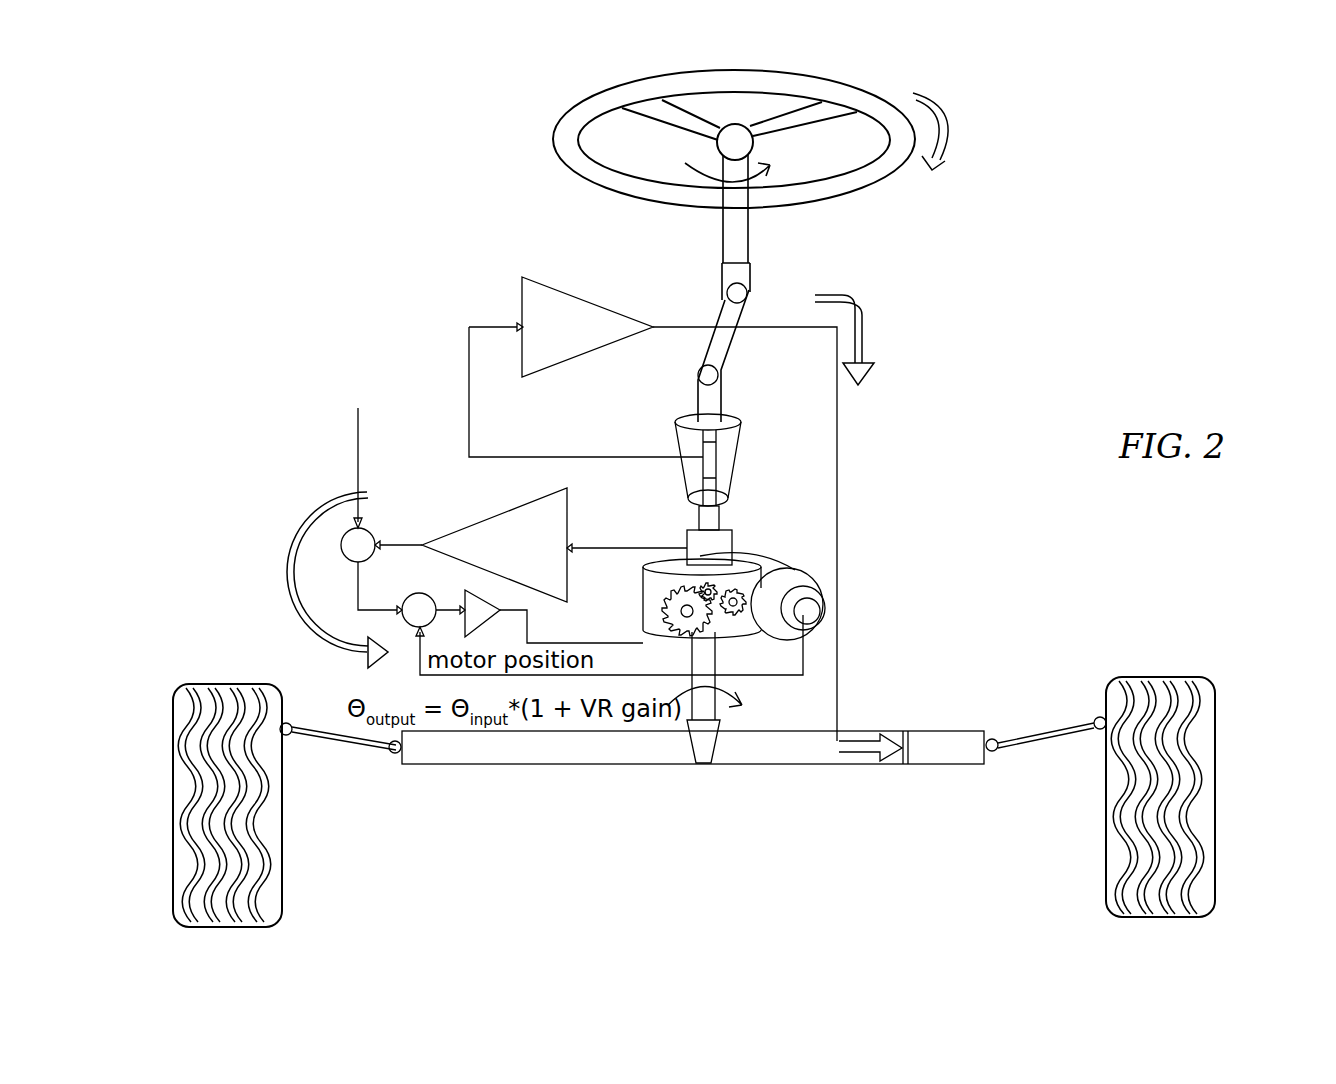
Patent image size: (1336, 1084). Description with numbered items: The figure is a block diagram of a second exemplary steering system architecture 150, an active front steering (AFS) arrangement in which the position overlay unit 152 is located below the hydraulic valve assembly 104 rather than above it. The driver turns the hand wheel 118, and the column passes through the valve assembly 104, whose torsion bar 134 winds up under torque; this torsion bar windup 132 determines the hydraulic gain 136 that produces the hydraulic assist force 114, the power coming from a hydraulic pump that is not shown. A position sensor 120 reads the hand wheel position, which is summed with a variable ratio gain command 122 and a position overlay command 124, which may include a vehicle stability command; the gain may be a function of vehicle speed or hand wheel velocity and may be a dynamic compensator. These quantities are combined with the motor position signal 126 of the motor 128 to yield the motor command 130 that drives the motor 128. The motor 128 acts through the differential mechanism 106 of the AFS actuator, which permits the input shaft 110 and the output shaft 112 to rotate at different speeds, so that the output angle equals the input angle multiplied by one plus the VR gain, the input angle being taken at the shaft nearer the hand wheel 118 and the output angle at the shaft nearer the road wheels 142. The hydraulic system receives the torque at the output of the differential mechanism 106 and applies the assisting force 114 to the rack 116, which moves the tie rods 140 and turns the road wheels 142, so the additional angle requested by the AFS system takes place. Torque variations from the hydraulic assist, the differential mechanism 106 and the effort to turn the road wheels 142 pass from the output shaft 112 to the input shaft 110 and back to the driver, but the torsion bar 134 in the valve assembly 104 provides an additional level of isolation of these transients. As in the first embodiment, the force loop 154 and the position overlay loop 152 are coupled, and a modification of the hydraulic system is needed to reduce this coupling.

The hydraulic valve assembly 104 is at (725, 460).
The differential mechanism 106 is at (745, 570).
The input shaft 110 is at (718, 522).
The output shaft 112 is at (707, 658).
The hydraulic assist force 114 is at (849, 750).
The rack 116 is at (958, 755).
The hand wheel 118 is at (607, 86).
The position sensor 120 is at (735, 552).
The variable ratio gain command 122 is at (475, 522).
The position overlay command 124 is at (350, 412).
The motor position signal 126 is at (443, 650).
The motor 128 is at (815, 594).
The motor command 130 is at (584, 608).
The torsion bar windup 132 is at (560, 418).
The torsion bar 134 is at (712, 455).
The hydraulic gain 136 is at (580, 300).
The tie rods 140 is at (305, 725).
The road wheels 142 is at (172, 745).
The steering system architecture 150 is at (166, 478).
The position overlay unit 152 is at (218, 591).
The force loop 154 is at (950, 382).